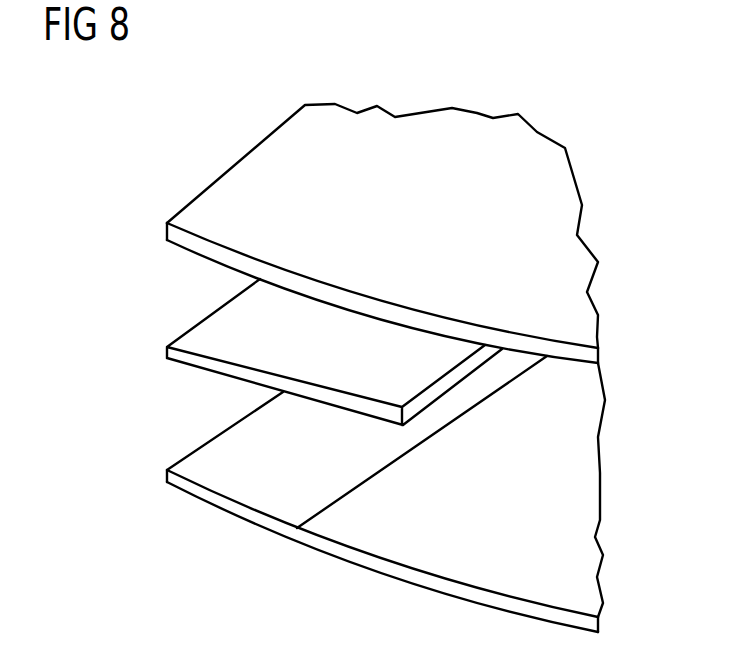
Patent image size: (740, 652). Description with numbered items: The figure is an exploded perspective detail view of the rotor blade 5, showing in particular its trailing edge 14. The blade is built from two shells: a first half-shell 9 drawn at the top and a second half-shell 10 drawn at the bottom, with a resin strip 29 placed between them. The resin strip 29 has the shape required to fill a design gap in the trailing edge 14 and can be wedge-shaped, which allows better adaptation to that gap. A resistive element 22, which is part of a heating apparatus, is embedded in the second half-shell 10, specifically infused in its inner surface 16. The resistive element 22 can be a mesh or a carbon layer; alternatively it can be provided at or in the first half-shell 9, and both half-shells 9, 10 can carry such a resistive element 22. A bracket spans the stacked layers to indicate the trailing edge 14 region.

The rotor blade 5 is at (127, 142).
The first half-shell 9 is at (477, 123).
The second half-shell 10 is at (315, 551).
The trailing edge 14 is at (88, 203).
The inner surface 16 is at (583, 476).
The resistive element 22 is at (205, 475).
The resin strip 29 is at (212, 348).